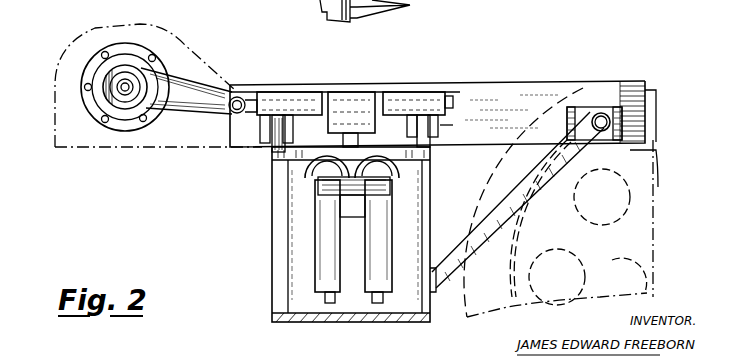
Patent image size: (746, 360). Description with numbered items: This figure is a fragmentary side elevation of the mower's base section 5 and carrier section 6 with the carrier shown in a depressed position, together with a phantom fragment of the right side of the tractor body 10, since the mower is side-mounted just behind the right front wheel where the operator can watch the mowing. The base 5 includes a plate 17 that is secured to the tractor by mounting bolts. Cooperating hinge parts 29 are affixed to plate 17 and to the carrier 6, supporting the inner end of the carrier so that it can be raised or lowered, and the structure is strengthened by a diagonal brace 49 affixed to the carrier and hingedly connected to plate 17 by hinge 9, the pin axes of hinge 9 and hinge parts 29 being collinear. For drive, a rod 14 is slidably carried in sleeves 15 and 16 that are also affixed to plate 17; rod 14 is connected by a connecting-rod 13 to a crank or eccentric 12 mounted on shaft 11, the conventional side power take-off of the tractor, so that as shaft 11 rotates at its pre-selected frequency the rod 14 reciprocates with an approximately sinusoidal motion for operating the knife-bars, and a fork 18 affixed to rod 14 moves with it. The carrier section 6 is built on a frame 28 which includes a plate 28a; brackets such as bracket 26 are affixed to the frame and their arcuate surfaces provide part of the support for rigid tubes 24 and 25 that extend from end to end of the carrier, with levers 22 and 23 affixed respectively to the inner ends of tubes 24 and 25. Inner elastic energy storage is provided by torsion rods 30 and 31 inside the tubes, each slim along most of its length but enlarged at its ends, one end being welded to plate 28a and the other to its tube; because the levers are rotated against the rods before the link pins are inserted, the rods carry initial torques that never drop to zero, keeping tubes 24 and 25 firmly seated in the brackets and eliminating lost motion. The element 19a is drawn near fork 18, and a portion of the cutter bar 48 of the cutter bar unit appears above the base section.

The base section 5 is at (326, 81).
The carrier section 6 is at (268, 296).
The hinge 9 is at (601, 112).
The tractor body 10 is at (172, 40).
The shaft 11 is at (118, 50).
The crank or eccentric 12 is at (127, 92).
The connecting-rod 13 is at (187, 90).
The rod 14 is at (451, 102).
The sleeve 15 is at (290, 102).
The sleeve 16 is at (425, 102).
The plate 17 is at (510, 95).
The fork 18 is at (352, 98).
The stem 19a is at (353, 137).
The lever 22 is at (308, 172).
The lever 23 is at (400, 172).
The rigid tube 24 is at (325, 260).
The rigid tube 25 is at (380, 240).
The bracket 26 is at (330, 190).
The frame 28 is at (290, 227).
The plate 28a is at (274, 152).
The hinge parts 29 is at (233, 143).
The torsion rod 30 is at (326, 305).
The torsion rod 31 is at (378, 305).
The bar 48 is at (321, 11).
The diagonal brace 49 is at (468, 248).